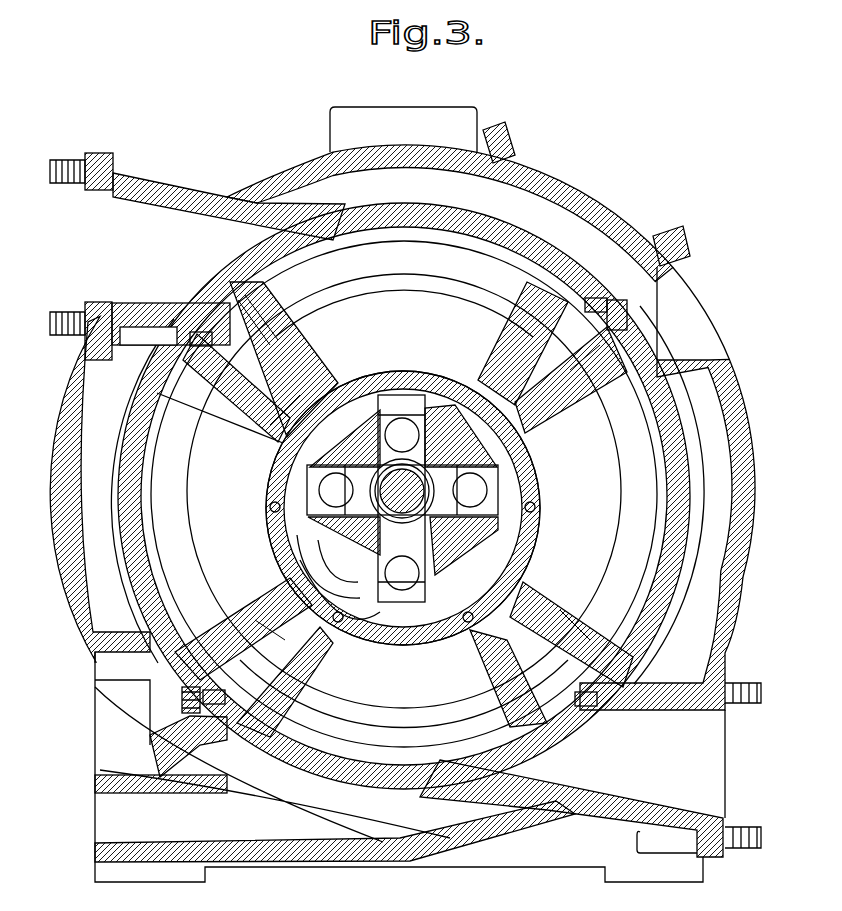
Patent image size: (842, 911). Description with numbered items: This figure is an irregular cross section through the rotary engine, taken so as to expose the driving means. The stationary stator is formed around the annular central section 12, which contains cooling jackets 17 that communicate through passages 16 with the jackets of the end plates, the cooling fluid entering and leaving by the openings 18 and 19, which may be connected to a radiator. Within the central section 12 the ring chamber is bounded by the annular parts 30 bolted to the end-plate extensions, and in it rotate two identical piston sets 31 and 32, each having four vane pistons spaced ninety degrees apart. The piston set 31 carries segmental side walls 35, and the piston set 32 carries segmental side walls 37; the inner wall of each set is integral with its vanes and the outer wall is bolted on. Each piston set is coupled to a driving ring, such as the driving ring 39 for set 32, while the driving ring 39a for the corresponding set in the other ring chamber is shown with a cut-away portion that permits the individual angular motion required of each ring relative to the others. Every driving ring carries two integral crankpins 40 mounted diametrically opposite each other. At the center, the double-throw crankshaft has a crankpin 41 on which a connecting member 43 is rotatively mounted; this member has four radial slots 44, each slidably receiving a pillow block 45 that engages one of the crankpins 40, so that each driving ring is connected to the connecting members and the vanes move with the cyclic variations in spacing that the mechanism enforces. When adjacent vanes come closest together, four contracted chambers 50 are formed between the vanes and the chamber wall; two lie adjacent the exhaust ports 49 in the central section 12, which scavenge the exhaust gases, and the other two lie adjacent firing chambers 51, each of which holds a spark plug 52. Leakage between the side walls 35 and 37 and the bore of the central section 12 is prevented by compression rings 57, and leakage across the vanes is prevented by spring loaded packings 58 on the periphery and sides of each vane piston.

The annular central section 12 is at (574, 190).
The passages 16 is at (84, 633).
The jackets 17 is at (500, 200).
The opening 18 is at (455, 118).
The opening 19 is at (115, 812).
The annular parts 30 is at (540, 532).
The piston set 31 is at (298, 332).
The piston set 32 is at (520, 340).
The segmental side walls 35 is at (404, 494).
The segmental side walls 37 is at (404, 491).
The driving ring 39 is at (424, 618).
The driving ring 39a is at (358, 600).
The crankpins 40 is at (400, 425).
The crankpin 41 is at (425, 502).
The connecting member 43 is at (452, 425).
The radial slots 44 is at (412, 395).
The pillow block 45 is at (500, 476).
The exhaust ports 49 is at (160, 215).
The contracted chambers 50 is at (398, 502).
The firing chambers 51 is at (585, 288).
The spark plug 52 is at (628, 312).
The compression rings 57 is at (155, 535).
The spring loaded packings 58 is at (250, 292).